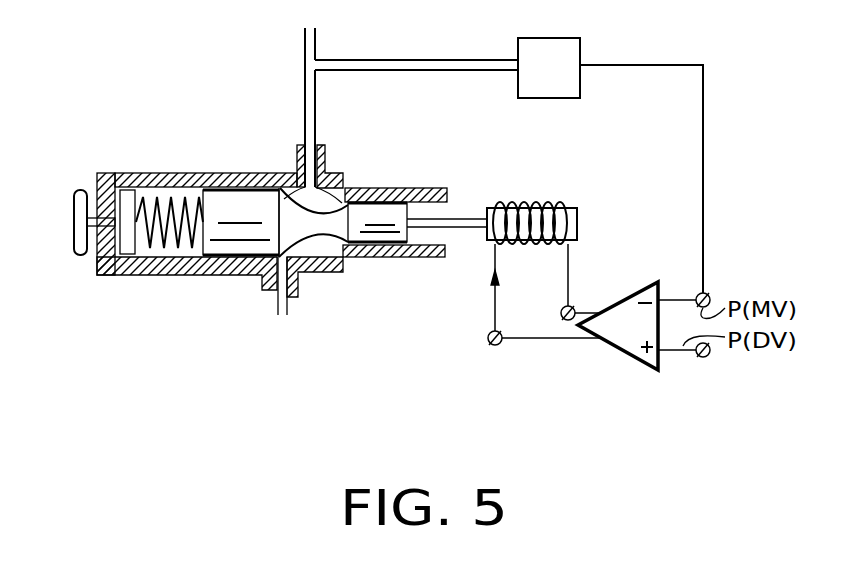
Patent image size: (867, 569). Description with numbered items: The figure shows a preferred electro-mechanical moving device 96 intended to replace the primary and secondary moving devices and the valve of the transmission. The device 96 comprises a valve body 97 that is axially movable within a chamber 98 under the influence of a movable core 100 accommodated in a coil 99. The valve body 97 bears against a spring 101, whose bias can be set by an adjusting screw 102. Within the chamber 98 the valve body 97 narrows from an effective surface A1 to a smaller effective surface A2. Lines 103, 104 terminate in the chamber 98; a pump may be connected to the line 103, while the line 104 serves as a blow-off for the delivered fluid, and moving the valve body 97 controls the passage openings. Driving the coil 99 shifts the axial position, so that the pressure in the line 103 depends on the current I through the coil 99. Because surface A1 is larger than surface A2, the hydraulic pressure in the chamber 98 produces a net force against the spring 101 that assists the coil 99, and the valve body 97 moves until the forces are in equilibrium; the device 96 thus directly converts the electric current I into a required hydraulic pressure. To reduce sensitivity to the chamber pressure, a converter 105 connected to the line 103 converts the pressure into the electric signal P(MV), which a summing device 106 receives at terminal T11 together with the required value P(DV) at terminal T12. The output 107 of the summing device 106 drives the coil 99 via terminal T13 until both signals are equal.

The electro-mechanical moving device 96 is at (118, 88).
The valve body 97 is at (217, 207).
The chamber 98 is at (323, 197).
The coil 99 is at (537, 207).
The movable core 100 is at (575, 212).
The spring 101 is at (168, 205).
The adjusting screw 102 is at (80, 190).
The line 103 is at (310, 113).
The line 104 is at (283, 298).
The converter 105 is at (562, 38).
The summing device 106 is at (623, 300).
The output 107 is at (586, 356).
The terminal T11 is at (698, 293).
The terminal T12 is at (702, 359).
The terminal T13 is at (488, 338).
The effective surface A1 is at (293, 185).
The effective surface A2 is at (370, 200).
The electric current I is at (493, 280).